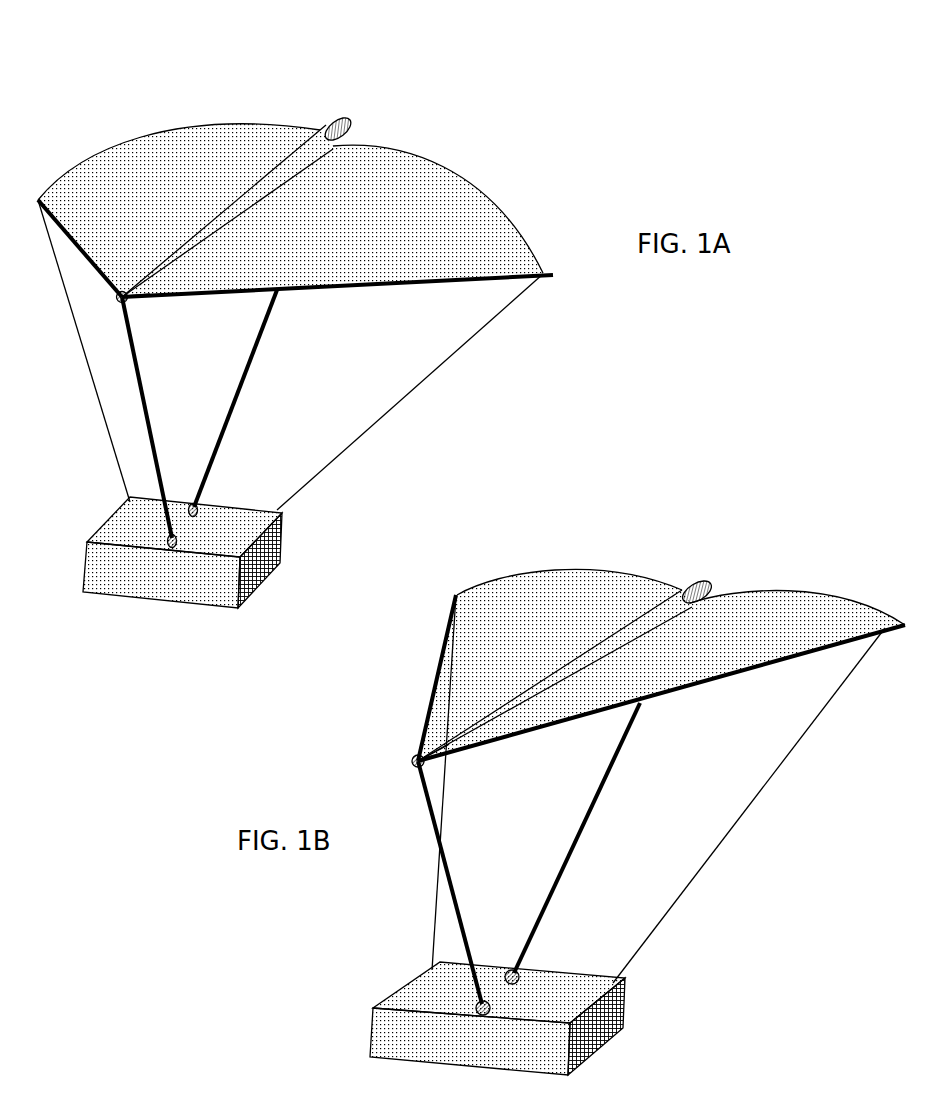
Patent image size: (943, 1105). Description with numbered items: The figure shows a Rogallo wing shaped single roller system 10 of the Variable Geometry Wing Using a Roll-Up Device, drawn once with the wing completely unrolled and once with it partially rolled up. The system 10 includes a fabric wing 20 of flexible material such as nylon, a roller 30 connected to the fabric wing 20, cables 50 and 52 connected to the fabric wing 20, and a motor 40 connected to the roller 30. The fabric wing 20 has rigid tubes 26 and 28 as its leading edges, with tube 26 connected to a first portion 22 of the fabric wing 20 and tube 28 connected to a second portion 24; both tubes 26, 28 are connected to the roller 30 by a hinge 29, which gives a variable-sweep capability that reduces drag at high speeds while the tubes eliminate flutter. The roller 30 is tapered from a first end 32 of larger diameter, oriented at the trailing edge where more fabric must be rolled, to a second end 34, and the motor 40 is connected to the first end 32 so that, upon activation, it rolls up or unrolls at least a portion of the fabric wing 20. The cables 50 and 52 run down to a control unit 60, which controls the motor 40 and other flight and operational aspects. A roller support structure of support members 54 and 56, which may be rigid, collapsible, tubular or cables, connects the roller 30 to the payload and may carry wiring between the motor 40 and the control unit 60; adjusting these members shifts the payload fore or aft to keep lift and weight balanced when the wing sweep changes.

In FIG. 1A, the Rogallo wing shaped single roller system 10 is at (76, 67).
In FIG. 1B, the Rogallo wing shaped single roller system 10 is at (508, 523).
In FIG. 1A, the fabric wing 20 is at (432, 139).
In FIG. 1B, the fabric wing 20 is at (793, 573).
In FIG. 1A, the first portion 22 is at (452, 172).
In FIG. 1B, the first portion 22 is at (817, 612).
In FIG. 1A, the second portion 24 is at (185, 140).
In FIG. 1B, the second portion 24 is at (603, 578).
In FIG. 1A, the tube 26 is at (385, 283).
In FIG. 1B, the tube 26 is at (740, 672).
In FIG. 1A, the tube 28 is at (55, 228).
In FIG. 1B, the tube 28 is at (437, 673).
In FIG. 1A, the hinge 29 is at (118, 305).
In FIG. 1B, the hinge 29 is at (408, 765).
In FIG. 1A, the roller 30 is at (310, 140).
In FIG. 1B, the roller 30 is at (668, 603).
In FIG. 1A, the first end 32 is at (320, 128).
In FIG. 1B, the first end 32 is at (686, 588).
In FIG. 1A, the second end 34 is at (150, 296).
In FIG. 1B, the second end 34 is at (448, 742).
In FIG. 1A, the motor 40 is at (350, 125).
In FIG. 1B, the motor 40 is at (713, 583).
In FIG. 1A, the cable 50 is at (495, 310).
In FIG. 1B, the cable 50 is at (800, 748).
In FIG. 1A, the cable 52 is at (82, 370).
In FIG. 1B, the cable 52 is at (432, 893).
In FIG. 1A, the support member 54 is at (250, 365).
In FIG. 1B, the support member 54 is at (592, 815).
In FIG. 1A, the support member 56 is at (150, 395).
In FIG. 1B, the support member 56 is at (450, 860).
In FIG. 1A, the control unit 60 is at (265, 545).
In FIG. 1B, the control unit 60 is at (625, 1000).